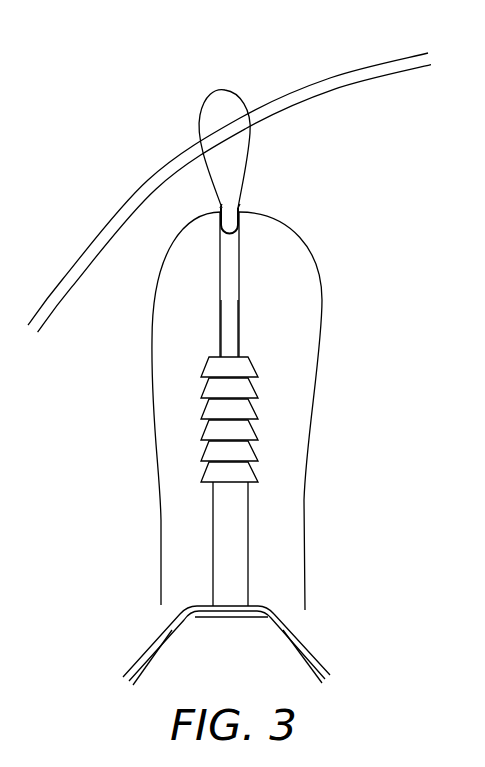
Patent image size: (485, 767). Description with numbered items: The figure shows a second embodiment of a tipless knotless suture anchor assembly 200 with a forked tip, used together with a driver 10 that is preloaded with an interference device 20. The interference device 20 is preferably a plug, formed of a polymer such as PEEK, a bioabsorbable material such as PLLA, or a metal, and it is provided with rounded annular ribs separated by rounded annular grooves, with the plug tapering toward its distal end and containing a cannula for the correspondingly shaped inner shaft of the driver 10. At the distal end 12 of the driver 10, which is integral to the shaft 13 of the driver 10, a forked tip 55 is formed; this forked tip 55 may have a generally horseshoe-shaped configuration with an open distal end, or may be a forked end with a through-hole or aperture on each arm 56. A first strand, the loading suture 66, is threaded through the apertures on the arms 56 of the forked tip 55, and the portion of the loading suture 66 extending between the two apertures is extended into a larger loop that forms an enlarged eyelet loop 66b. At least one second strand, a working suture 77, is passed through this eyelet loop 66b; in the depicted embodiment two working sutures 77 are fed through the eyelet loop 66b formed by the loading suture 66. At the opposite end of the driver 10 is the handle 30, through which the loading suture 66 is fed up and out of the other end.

The knotless suture anchor assembly 200 is at (136, 68).
The working suture 77 is at (97, 233).
The loading suture 66 is at (152, 366).
The eyelet loop 66b is at (253, 143).
The arm 56 is at (221, 208).
The forked tip 55 is at (242, 234).
The distal end 12 is at (233, 293).
The shaft 13 is at (233, 330).
The interference device 20 is at (245, 430).
The driver 10 is at (242, 538).
The handle 30 is at (275, 653).